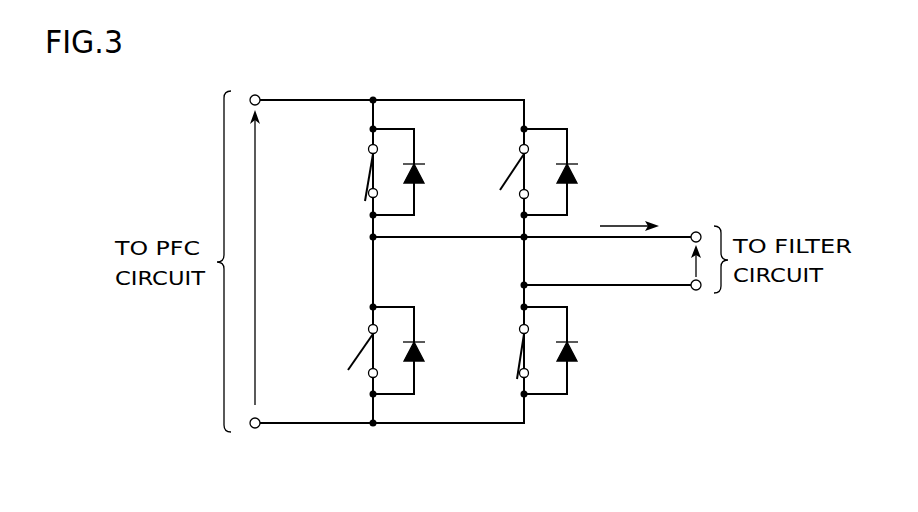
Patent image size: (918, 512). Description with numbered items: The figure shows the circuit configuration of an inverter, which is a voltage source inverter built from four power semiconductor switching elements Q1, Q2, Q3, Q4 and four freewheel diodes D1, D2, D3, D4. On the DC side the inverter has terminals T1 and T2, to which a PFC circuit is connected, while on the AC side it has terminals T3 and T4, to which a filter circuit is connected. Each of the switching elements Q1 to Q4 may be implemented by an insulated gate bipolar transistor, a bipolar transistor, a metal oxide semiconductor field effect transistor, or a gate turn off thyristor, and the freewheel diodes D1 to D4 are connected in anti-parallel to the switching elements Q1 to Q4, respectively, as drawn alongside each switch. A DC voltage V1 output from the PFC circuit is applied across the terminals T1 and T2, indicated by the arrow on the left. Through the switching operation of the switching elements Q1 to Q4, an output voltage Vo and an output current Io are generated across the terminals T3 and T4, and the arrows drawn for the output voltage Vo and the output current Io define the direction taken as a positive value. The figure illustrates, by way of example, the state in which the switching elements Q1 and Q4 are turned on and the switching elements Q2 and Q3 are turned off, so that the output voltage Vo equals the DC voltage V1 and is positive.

The terminal T1 is at (256, 94).
The terminal T2 is at (256, 429).
The terminal T3 is at (696, 231).
The terminal T4 is at (697, 291).
The switching element Q1 is at (366, 174).
The switching element Q2 is at (513, 167).
The switching element Q3 is at (360, 351).
The switching element Q4 is at (517, 344).
The freewheel diode D1 is at (425, 177).
The freewheel diode D2 is at (578, 178).
The freewheel diode D3 is at (425, 355).
The freewheel diode D4 is at (578, 355).
The DC voltage V1 is at (268, 257).
The output voltage Vo is at (678, 261).
The output current Io is at (629, 215).